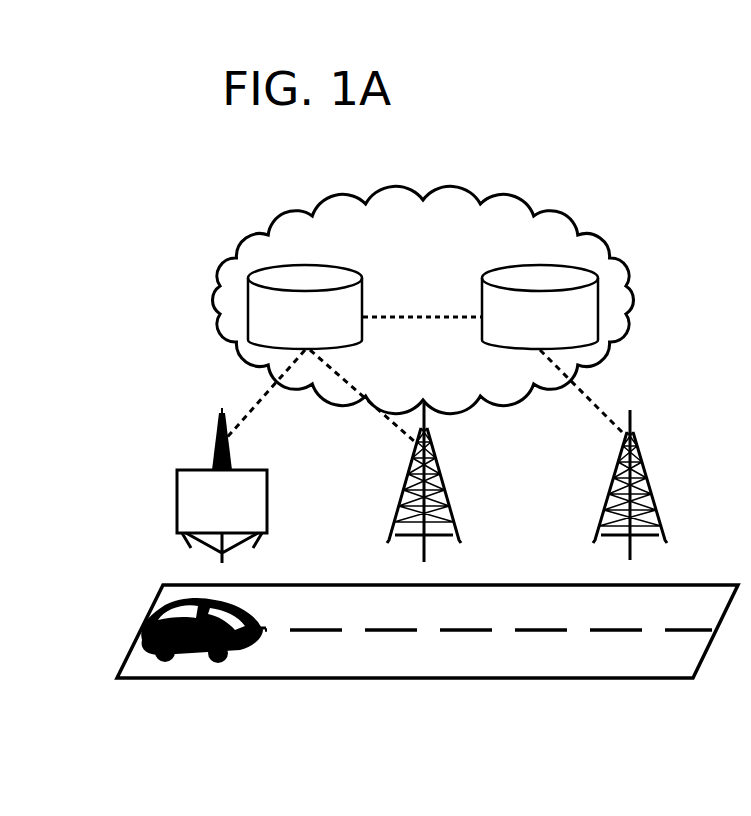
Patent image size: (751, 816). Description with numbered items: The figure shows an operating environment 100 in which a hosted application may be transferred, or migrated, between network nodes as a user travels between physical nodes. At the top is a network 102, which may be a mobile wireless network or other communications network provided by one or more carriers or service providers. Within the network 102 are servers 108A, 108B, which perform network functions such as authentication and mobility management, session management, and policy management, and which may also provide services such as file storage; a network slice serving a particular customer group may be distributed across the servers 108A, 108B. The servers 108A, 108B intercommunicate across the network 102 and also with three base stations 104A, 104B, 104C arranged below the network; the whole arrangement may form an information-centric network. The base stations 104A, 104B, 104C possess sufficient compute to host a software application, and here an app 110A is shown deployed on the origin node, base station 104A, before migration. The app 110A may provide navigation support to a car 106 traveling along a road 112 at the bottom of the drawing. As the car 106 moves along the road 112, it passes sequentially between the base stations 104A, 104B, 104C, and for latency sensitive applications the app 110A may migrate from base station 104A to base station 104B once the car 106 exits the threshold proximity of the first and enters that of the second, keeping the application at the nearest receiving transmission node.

The operating environment 100 is at (650, 197).
The network 102 is at (275, 208).
The base station 104A is at (210, 452).
The base station 104B is at (462, 537).
The base station 104C is at (667, 533).
The car 106 is at (191, 593).
The server 108A is at (328, 340).
The server 108B is at (563, 340).
The app 110A is at (246, 528).
The road 112 is at (703, 585).